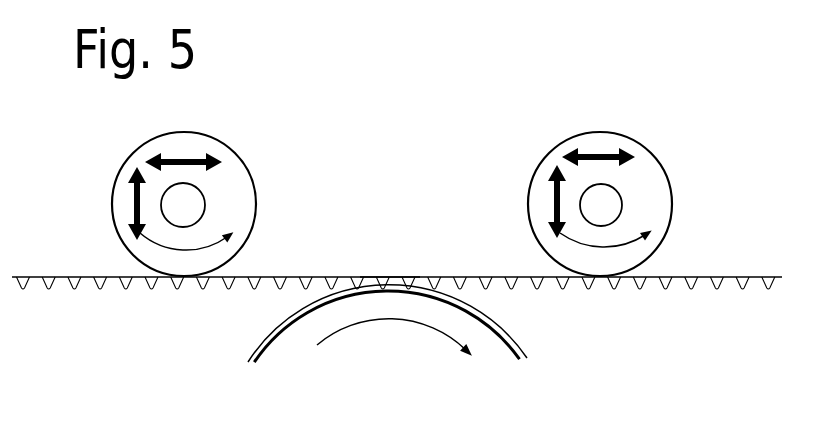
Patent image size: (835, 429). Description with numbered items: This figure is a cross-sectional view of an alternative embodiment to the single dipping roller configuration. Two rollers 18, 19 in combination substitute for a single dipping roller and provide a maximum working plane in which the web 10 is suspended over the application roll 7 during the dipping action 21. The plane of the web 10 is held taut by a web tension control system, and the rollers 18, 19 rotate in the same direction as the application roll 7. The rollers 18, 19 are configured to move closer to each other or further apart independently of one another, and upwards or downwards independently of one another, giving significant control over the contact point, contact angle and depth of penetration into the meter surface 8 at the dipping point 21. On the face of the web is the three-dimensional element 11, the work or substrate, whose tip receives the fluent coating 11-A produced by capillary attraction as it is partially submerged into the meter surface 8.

The roller 18 is at (244, 162).
The roller 19 is at (547, 157).
The three-dimensional element 11 is at (314, 277).
The fluent coating 11-A is at (588, 281).
The web 10 is at (370, 277).
The meter surface 8 is at (297, 312).
The application roll 7 is at (508, 335).
The dipping action 21 is at (385, 294).